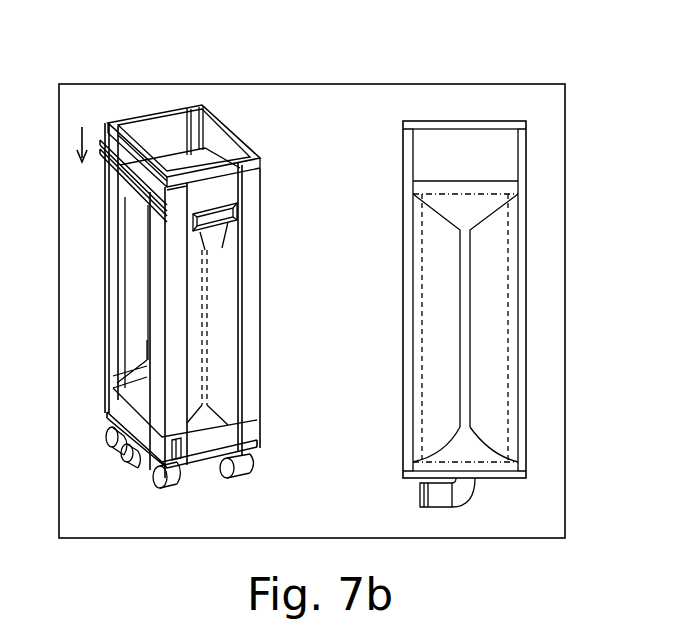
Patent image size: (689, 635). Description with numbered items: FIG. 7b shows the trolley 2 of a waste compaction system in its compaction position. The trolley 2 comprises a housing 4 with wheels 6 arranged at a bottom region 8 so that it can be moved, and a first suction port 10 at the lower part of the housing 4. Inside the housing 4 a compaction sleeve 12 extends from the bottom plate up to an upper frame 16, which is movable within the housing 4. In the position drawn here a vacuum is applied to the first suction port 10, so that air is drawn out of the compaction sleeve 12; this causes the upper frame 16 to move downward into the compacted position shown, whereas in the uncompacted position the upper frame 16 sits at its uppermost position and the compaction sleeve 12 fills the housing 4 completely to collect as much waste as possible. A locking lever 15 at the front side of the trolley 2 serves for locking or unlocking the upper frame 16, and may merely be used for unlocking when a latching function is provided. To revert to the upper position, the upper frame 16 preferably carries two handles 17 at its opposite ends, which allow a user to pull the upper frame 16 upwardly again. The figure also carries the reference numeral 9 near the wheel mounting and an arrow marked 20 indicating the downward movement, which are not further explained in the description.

The trolley 2 is at (268, 170).
The housing 4 is at (403, 310).
The wheels 6 is at (253, 466).
The bottom region 8 is at (268, 446).
The mounting bracket 9 is at (181, 440).
The first suction port 10 is at (125, 462).
The compaction sleeve 12 is at (463, 325).
The locking lever 15 is at (262, 178).
The upper frame 16 is at (457, 174).
The handles 17 is at (224, 228).
The insertion direction 20 is at (172, 150).